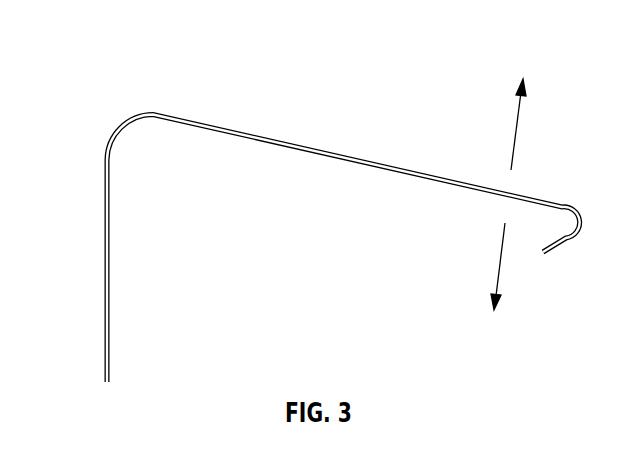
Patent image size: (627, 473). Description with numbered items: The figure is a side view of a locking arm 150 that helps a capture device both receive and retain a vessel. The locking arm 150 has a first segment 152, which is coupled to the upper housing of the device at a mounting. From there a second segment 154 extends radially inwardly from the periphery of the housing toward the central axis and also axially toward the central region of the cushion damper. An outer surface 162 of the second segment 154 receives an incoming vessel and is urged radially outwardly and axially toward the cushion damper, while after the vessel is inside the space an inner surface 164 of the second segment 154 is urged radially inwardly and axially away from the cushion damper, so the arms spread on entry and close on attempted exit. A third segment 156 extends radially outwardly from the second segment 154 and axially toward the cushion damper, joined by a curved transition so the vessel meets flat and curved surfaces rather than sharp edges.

The locking arm 150 is at (155, 87).
The first segment 152 is at (109, 257).
The second segment 154 is at (227, 128).
The third segment 156 is at (555, 246).
The outer surface 162 is at (458, 180).
The inner surface 164 is at (432, 184).